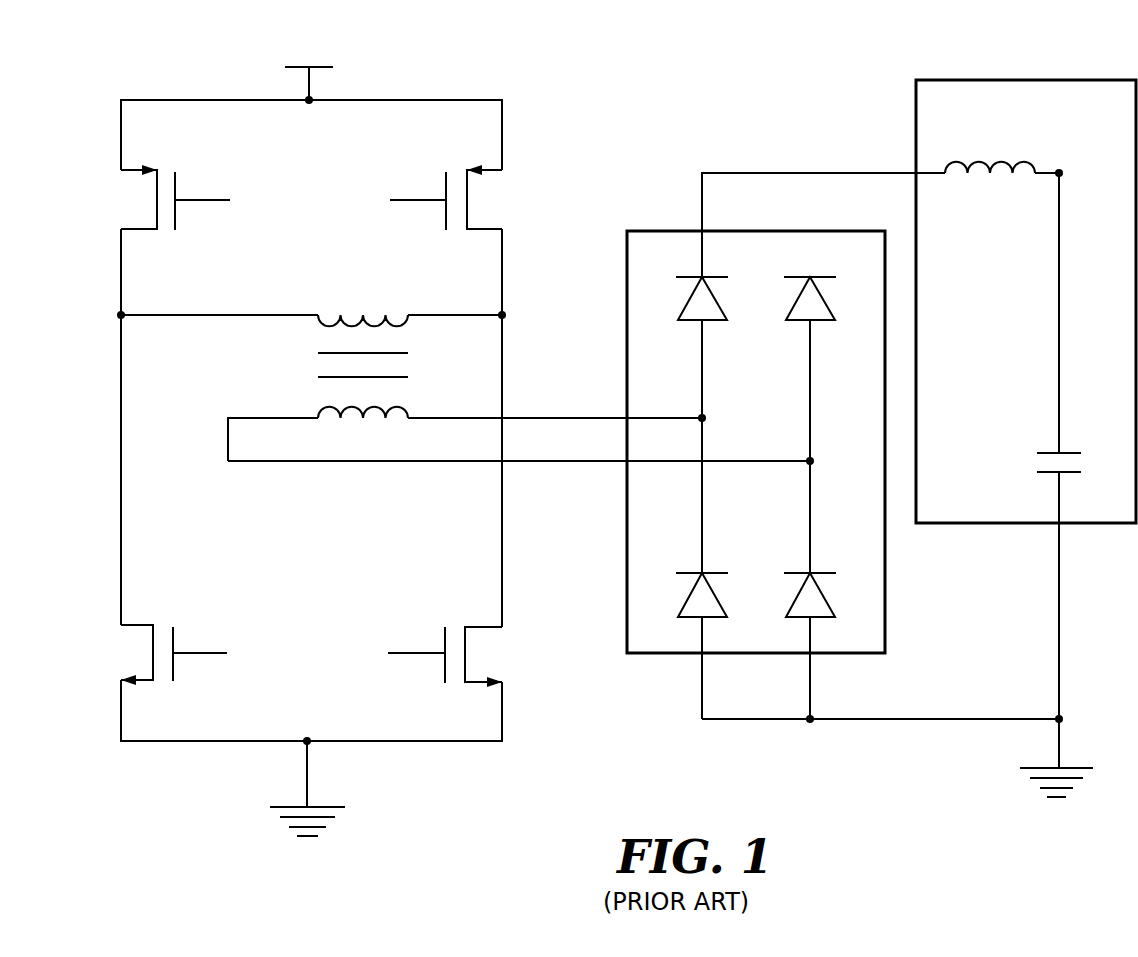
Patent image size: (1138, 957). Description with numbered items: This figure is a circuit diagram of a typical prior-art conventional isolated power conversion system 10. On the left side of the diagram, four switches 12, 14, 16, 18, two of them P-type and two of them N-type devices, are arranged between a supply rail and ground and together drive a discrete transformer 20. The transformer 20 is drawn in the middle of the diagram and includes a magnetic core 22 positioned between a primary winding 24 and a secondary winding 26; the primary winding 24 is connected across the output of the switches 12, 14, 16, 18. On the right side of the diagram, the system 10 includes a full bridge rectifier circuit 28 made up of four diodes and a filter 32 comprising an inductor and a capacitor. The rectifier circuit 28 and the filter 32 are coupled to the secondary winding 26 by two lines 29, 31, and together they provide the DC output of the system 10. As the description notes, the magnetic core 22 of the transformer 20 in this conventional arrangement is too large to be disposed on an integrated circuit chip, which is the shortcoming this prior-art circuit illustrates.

The isolated power conversion system 10 is at (729, 56).
The switch 12 is at (175, 177).
The switch 14 is at (446, 179).
The switch 16 is at (173, 633).
The switch 18 is at (445, 637).
The discrete transformer 20 is at (236, 373).
The magnetic core 22 is at (397, 353).
The primary winding 24 is at (365, 313).
The secondary winding 26 is at (318, 415).
The full bridge rectifier circuit 28 is at (648, 655).
The line 29 is at (563, 418).
The line 31 is at (562, 464).
The filter 32 is at (1033, 80).